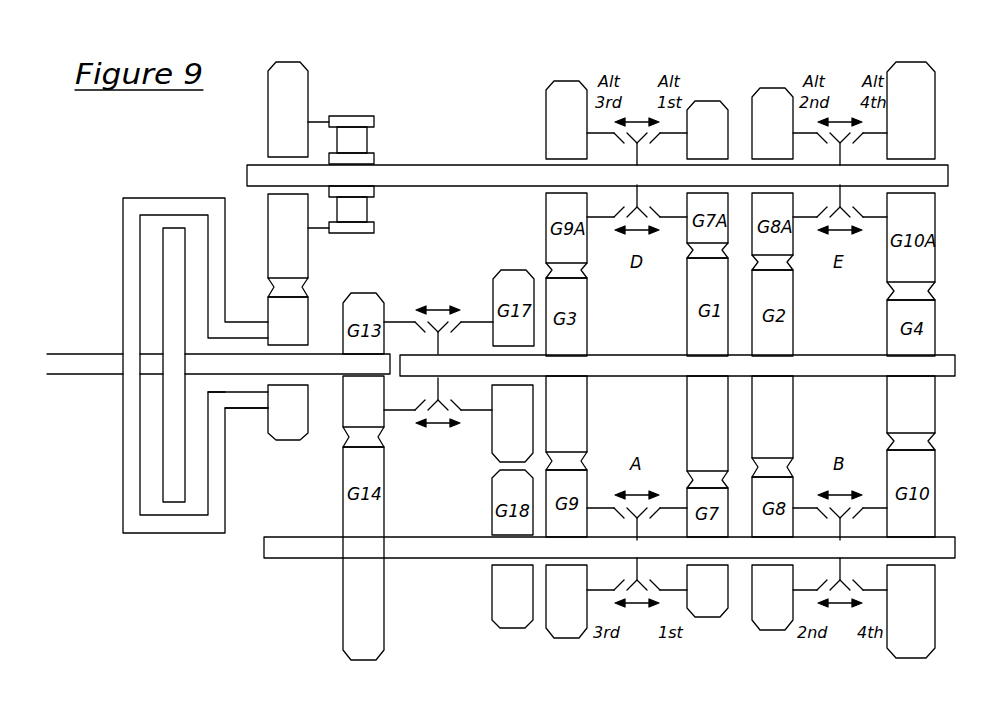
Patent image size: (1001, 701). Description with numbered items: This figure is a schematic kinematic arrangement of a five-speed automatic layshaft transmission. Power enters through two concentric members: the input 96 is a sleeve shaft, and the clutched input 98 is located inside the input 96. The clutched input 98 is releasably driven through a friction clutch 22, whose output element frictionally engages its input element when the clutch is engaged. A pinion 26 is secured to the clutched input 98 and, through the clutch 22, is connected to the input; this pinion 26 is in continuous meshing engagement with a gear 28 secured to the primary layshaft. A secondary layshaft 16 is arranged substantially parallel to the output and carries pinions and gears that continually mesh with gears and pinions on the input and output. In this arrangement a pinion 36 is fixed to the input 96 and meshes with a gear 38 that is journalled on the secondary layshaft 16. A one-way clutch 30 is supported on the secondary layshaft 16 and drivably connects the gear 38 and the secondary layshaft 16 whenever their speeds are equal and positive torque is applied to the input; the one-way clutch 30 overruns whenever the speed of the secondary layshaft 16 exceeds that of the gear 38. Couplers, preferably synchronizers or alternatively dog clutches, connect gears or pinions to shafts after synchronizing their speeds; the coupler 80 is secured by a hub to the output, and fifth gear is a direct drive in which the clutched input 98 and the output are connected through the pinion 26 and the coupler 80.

The secondary layshaft 16 is at (466, 174).
The friction clutch 22 is at (148, 176).
The pinion 26 is at (363, 293).
The gear 28 is at (377, 520).
The one-way clutch 30 is at (360, 102).
The pinion 36 is at (303, 420).
The gear 38 is at (278, 258).
The coupler 80 is at (440, 283).
The input 96 is at (258, 410).
The clutched input 98 is at (323, 362).